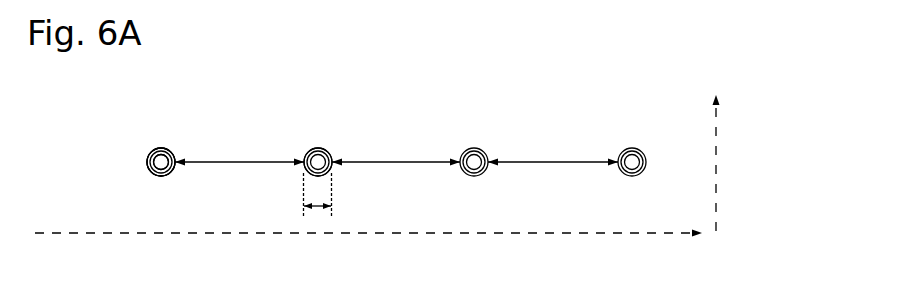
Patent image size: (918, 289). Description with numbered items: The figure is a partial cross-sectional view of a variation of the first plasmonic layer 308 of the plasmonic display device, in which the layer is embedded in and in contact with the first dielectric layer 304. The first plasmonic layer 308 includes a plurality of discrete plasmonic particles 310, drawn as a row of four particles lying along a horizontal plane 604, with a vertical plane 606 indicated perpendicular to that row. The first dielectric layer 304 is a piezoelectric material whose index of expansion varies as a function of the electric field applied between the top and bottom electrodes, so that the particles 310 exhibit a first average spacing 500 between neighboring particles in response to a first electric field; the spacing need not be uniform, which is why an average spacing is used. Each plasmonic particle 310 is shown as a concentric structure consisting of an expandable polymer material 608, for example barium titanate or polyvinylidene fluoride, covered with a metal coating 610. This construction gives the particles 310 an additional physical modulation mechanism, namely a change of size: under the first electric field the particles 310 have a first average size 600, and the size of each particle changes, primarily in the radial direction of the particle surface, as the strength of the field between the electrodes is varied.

The first dielectric layer 304 is at (452, 84).
The first plasmonic layer 308 is at (92, 159).
The plasmonic particles 310 is at (270, 140).
The first average spacing 500 is at (245, 164).
The first average size 600 is at (316, 209).
The horizontal plane 604 is at (414, 212).
The vertical plane 606 is at (715, 134).
The expandable polymer material 608 is at (161, 166).
The metal coating 610 is at (161, 148).